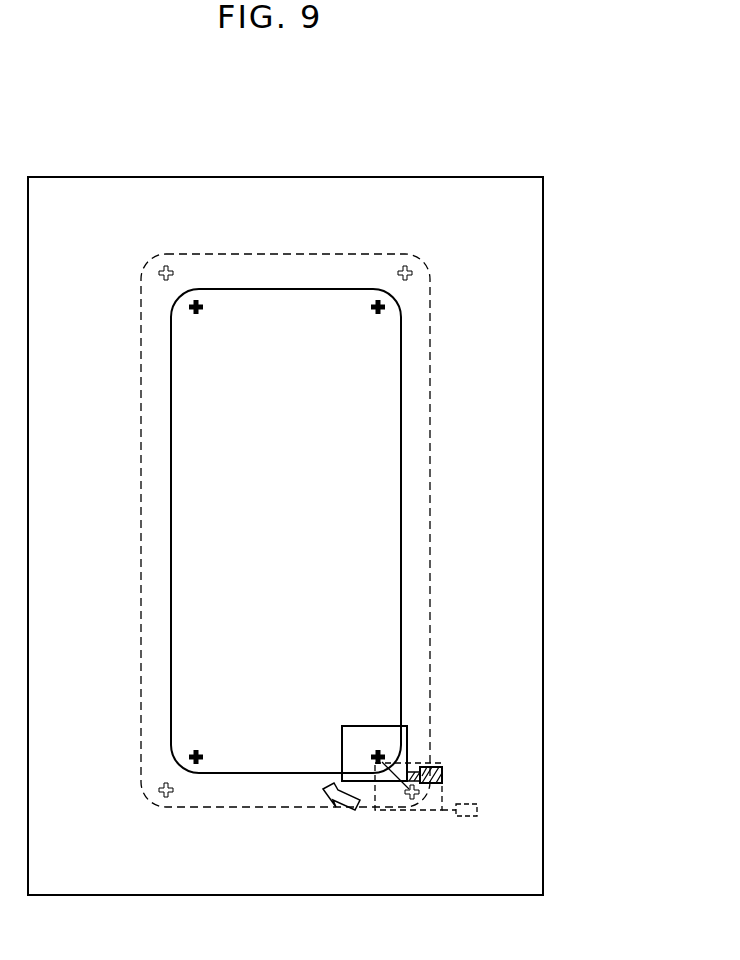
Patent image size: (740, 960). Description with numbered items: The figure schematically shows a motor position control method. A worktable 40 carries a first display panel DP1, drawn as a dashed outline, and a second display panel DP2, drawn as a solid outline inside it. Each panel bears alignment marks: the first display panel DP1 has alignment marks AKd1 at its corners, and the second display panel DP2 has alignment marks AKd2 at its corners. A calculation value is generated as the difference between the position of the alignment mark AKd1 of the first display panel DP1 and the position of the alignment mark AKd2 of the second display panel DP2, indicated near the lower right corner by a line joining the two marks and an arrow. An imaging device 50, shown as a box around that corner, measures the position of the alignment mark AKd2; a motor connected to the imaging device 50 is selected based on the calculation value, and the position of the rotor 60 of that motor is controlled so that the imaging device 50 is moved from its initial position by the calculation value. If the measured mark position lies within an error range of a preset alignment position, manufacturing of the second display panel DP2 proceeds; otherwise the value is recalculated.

The worktable 40 is at (206, 177).
The first display panel DP1 is at (307, 254).
The second display panel DP2 is at (356, 289).
The alignment mark of the first display panel AKd1 is at (412, 273).
The alignment mark of the second display panel AKd2 is at (385, 307).
The imaging device 50 is at (408, 738).
The rotor 60 is at (443, 778).